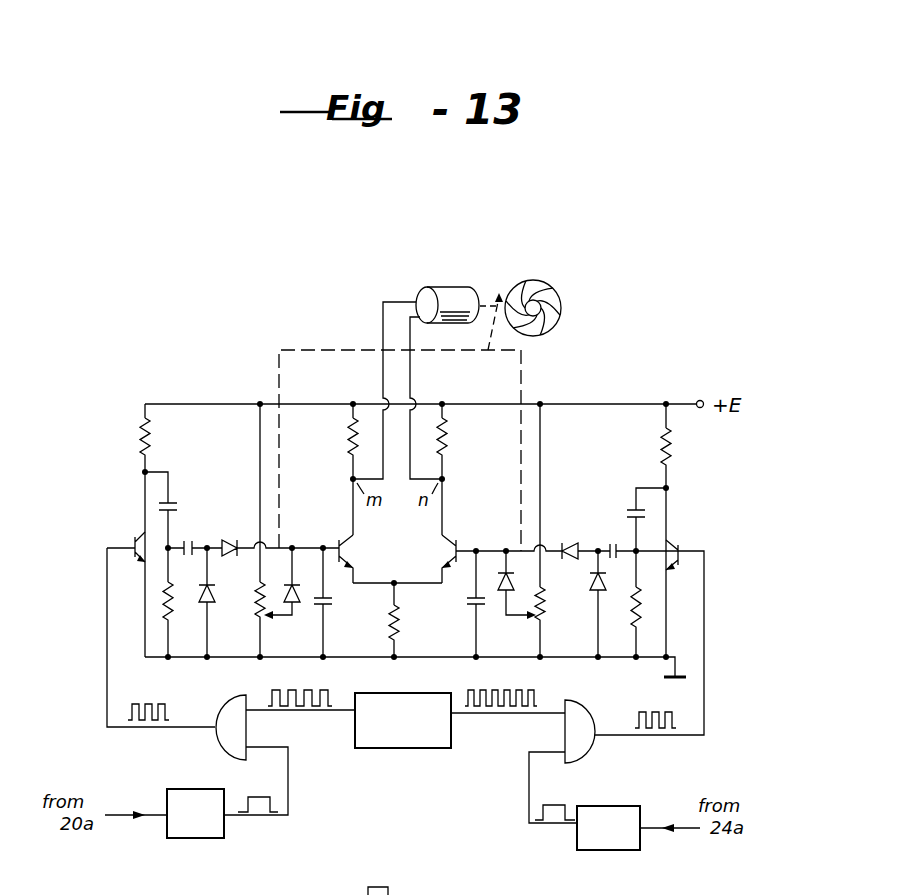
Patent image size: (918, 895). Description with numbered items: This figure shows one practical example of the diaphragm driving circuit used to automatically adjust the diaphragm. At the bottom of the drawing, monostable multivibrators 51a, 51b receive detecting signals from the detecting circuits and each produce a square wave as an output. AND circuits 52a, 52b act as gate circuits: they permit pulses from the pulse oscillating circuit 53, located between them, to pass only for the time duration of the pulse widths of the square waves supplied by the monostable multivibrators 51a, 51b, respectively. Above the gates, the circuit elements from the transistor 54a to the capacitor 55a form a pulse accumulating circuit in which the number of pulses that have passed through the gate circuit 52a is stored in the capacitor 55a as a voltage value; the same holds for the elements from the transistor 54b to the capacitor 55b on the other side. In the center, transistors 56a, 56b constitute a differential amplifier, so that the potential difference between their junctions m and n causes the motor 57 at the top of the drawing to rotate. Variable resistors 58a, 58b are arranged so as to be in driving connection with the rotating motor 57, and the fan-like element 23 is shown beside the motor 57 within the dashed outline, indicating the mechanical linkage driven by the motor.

The motor 57 is at (455, 297).
The fan 23 is at (561, 312).
The transistor 54a is at (136, 540).
The transistor 54b is at (673, 552).
The transistor 56a is at (342, 528).
The transistor 56b is at (460, 539).
The variable resistor 58a is at (261, 530).
The variable resistor 58b is at (542, 530).
The capacitor 55a is at (333, 603).
The capacitor 55b is at (467, 606).
The AND circuit 52a is at (229, 706).
The AND circuit 52b is at (578, 705).
The pulse oscillating circuit 53 is at (399, 764).
The monostable multivibrator 51a is at (212, 830).
The monostable multivibrator 51b is at (576, 872).